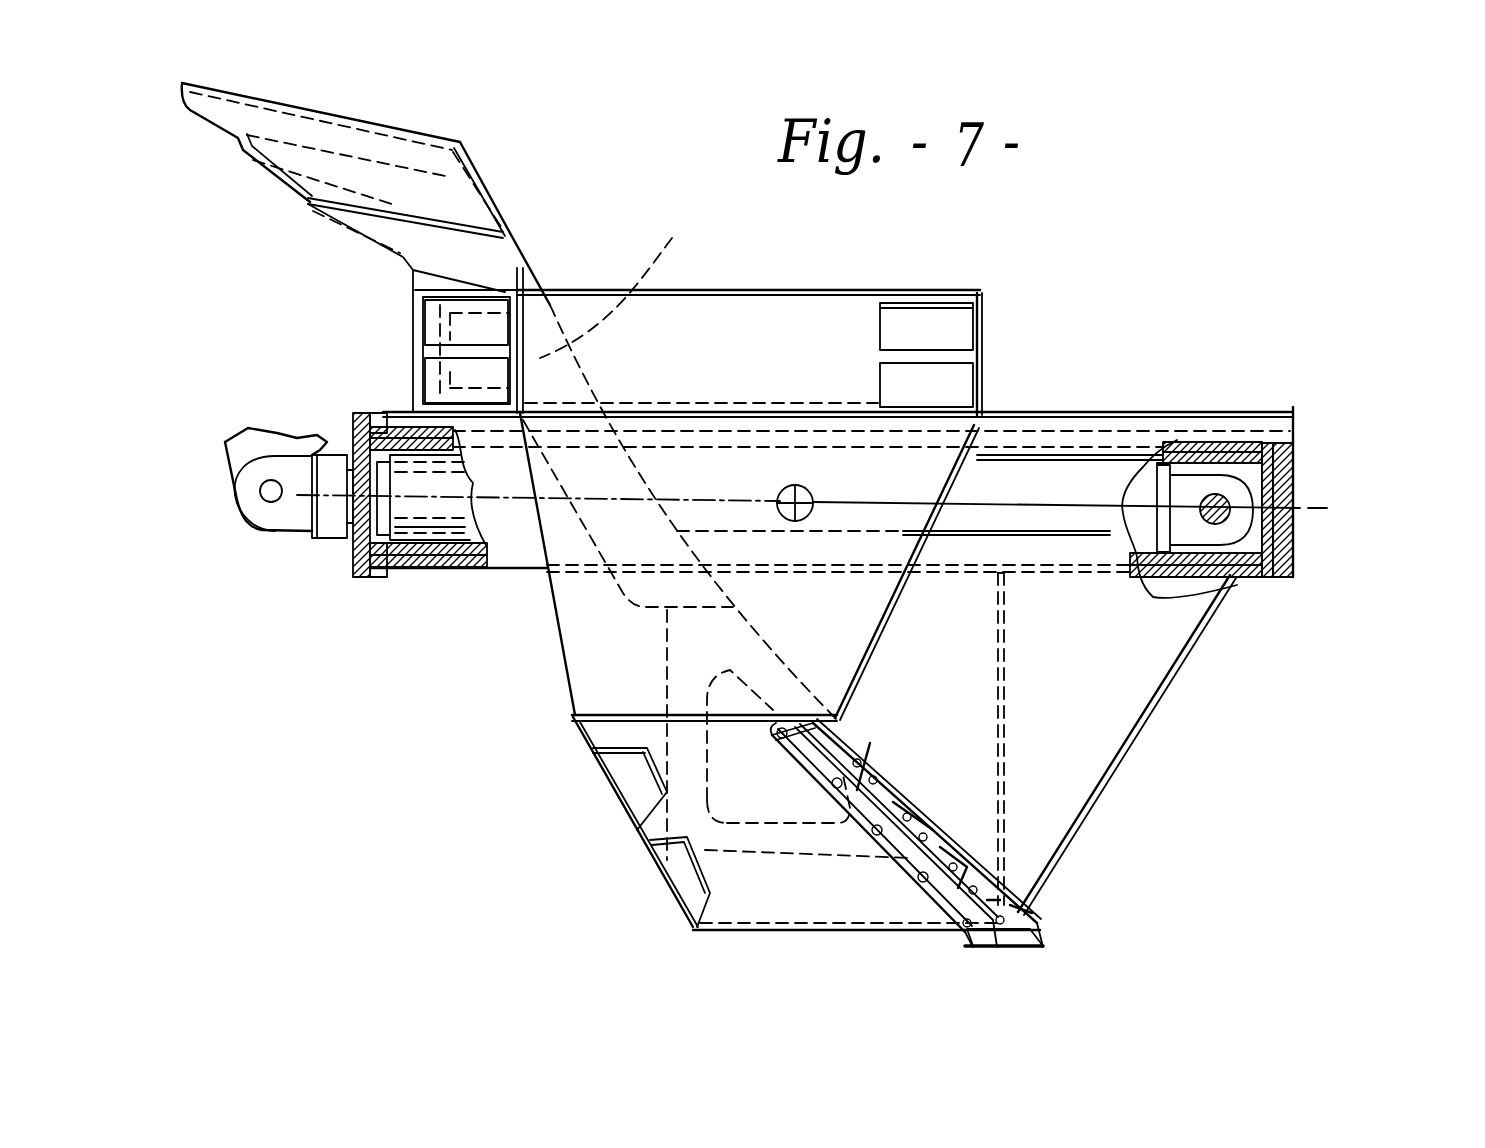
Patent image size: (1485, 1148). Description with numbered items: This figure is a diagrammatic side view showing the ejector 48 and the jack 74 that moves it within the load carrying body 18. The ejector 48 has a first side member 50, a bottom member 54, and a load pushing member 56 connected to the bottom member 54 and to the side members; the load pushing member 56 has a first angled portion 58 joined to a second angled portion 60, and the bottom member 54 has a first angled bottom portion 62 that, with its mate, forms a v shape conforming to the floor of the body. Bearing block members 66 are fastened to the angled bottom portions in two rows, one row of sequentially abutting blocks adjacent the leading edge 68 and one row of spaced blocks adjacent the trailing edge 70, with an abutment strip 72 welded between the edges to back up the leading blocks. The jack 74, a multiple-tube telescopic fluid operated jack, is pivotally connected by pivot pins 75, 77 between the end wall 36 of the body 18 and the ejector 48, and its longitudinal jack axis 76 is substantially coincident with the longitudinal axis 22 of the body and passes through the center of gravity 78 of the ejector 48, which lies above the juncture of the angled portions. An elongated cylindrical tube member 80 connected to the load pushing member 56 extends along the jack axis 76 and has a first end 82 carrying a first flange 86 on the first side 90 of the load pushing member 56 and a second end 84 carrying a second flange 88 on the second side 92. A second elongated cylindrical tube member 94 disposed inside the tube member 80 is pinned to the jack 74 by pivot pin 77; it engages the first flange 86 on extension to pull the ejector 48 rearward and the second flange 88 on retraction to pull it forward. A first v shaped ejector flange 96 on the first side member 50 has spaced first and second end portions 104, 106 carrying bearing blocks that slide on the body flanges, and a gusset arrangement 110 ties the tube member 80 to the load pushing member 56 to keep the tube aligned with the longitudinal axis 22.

The load carrying body 18 is at (268, 458).
The longitudinal axis 22 is at (877, 502).
The end wall 36 is at (297, 440).
The ejector 48 is at (352, 226).
The first side member 50 is at (587, 634).
The bottom member 54 is at (1032, 933).
The load pushing member 56 is at (527, 275).
The first angled portion 58 is at (797, 642).
The second angled portion 60 is at (672, 238).
The first angled bottom portion 62 is at (697, 930).
The bearing block members 66 is at (650, 860).
The leading edge 68 is at (1022, 910).
The trailing edge 70 is at (660, 873).
The abutment strip 72 is at (935, 892).
The jack 74 is at (318, 540).
The pivot pin 75 is at (266, 480).
The longitudinal jack axis 76 is at (1312, 502).
The pivot pin 77 is at (1225, 515).
The center of gravity 78 is at (808, 496).
The cylindrical tube member 80 is at (487, 572).
The first end 82 is at (1290, 446).
The second end 84 is at (336, 635).
The first flange 86 is at (1293, 560).
The second flange 88 is at (353, 553).
The first side 90 is at (1175, 780).
The second side 92 is at (545, 700).
The second elongated cylindrical tube member 94 is at (1235, 572).
The first v shaped ejector flange 96 is at (798, 292).
The first end portion 104 is at (982, 350).
The second end portion 106 is at (420, 380).
The gusset arrangement 110 is at (1150, 700).